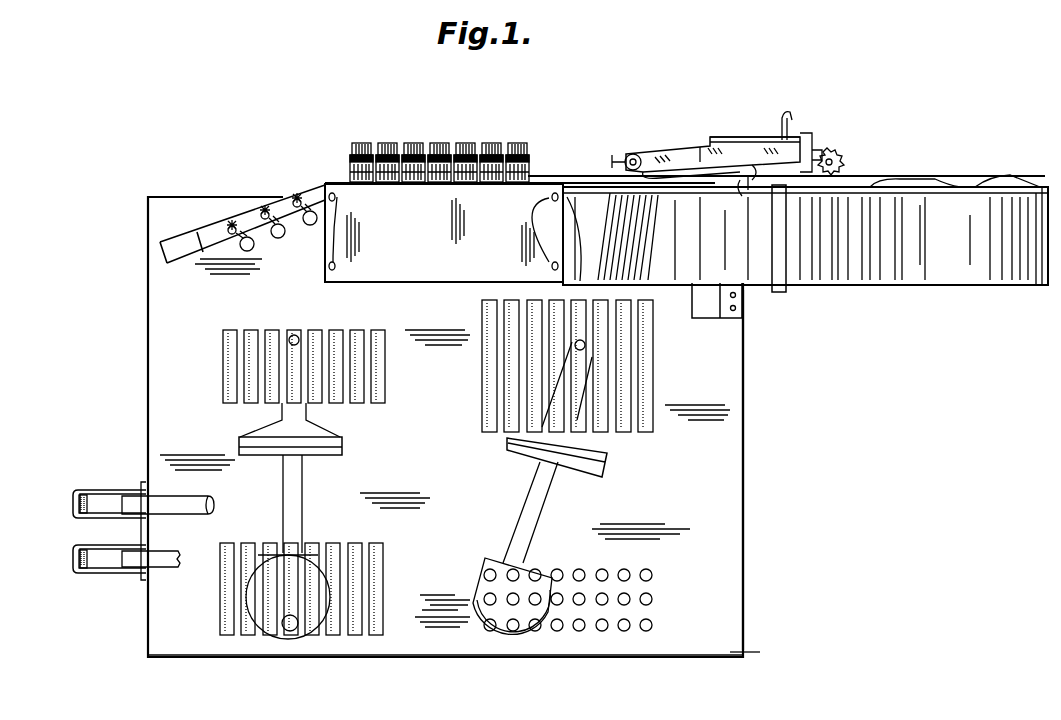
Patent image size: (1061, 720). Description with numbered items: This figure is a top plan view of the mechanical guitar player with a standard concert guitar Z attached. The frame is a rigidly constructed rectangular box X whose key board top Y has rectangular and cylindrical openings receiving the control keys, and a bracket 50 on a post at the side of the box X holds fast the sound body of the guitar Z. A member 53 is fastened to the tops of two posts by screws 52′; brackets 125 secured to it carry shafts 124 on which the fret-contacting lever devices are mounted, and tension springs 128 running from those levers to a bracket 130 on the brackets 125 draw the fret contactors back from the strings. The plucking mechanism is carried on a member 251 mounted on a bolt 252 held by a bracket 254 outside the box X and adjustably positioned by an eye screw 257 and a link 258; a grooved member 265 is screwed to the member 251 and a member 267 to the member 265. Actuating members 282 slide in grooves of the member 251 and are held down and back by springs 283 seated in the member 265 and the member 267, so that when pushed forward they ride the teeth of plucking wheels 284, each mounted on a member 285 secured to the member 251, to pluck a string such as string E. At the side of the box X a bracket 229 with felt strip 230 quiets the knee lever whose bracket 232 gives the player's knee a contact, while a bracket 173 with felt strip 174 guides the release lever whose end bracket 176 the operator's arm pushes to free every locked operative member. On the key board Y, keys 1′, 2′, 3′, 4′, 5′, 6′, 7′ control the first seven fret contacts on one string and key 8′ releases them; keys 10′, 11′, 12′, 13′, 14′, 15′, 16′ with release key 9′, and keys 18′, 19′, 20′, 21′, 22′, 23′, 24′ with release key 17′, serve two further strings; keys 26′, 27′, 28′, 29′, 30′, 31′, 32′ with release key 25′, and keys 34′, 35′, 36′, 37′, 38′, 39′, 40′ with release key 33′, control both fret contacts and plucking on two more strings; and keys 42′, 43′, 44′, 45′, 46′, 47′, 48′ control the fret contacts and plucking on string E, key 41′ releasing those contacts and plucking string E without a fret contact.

The tension springs 128 is at (429, 150).
The bracket 130 is at (352, 146).
The shafts 124 is at (350, 162).
The brackets 125 is at (340, 180).
The screws 52′ is at (336, 197).
The member 53 is at (446, 280).
The member 251 is at (672, 148).
The bolt 252 is at (610, 152).
The bracket 254 is at (620, 160).
The member 265 is at (745, 138).
The springs 283 is at (792, 118).
The member 267 is at (810, 138).
The actuating members 282 is at (820, 150).
The plucking wheels 284 is at (835, 152).
The members 285 is at (808, 175).
The guitar string E is at (878, 176).
The eye screw 257 is at (760, 178).
The link 258 is at (742, 182).
The bracket 50 is at (786, 285).
The guitar Z is at (935, 270).
The box X is at (752, 440).
The key board top Y is at (712, 500).
The bracket 229 is at (110, 486).
The felt strip 230 is at (88, 513).
The bracket 232 is at (172, 512).
The felt strip 174 is at (86, 546).
The bracket 173 is at (90, 574).
The bracket 176 is at (168, 567).
The key 1′ is at (251, 357).
The key 2′ is at (272, 357).
The key 3′ is at (294, 357).
The key 4′ is at (315, 357).
The key 5′ is at (336, 357).
The key 6′ is at (357, 357).
The key 7′ is at (378, 357).
The key 8′ is at (230, 357).
The key 9′ is at (489, 358).
The key 10′ is at (514, 358).
The key 11′ is at (537, 358).
The key 12′ is at (559, 358).
The key 13′ is at (581, 358).
The key 14′ is at (603, 358).
The key 15′ is at (626, 358).
The key 16′ is at (648, 358).
The key 17′ is at (230, 580).
The key 18′ is at (251, 580).
The key 19′ is at (273, 580).
The key 20′ is at (294, 580).
The key 21′ is at (315, 580).
The key 22′ is at (336, 580).
The key 23′ is at (358, 580).
The key 24′ is at (379, 580).
The key 25′ is at (483, 575).
The key 26′ is at (510, 570).
The key 27′ is at (536, 570).
The key 28′ is at (562, 567).
The key 29′ is at (584, 567).
The key 30′ is at (606, 567).
The key 31′ is at (629, 567).
The key 32′ is at (651, 567).
The key 33′ is at (483, 599).
The key 34′ is at (507, 594).
The key 35′ is at (530, 594).
The key 36′ is at (552, 594).
The key 37′ is at (575, 594).
The key 38′ is at (598, 594).
The key 39′ is at (620, 594).
The key 40′ is at (642, 594).
The key 41′ is at (488, 631).
The key 42′ is at (513, 631).
The key 43′ is at (538, 631).
The key 44′ is at (554, 631).
The key 45′ is at (579, 631).
The key 46′ is at (602, 631).
The key 47′ is at (624, 631).
The key 48′ is at (650, 630).